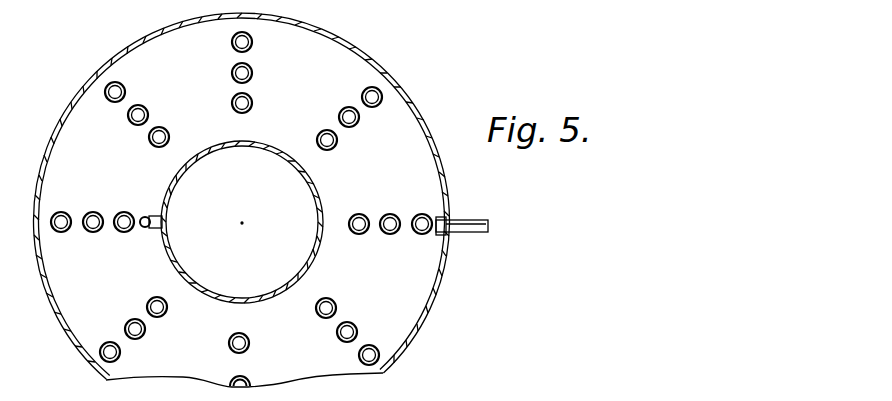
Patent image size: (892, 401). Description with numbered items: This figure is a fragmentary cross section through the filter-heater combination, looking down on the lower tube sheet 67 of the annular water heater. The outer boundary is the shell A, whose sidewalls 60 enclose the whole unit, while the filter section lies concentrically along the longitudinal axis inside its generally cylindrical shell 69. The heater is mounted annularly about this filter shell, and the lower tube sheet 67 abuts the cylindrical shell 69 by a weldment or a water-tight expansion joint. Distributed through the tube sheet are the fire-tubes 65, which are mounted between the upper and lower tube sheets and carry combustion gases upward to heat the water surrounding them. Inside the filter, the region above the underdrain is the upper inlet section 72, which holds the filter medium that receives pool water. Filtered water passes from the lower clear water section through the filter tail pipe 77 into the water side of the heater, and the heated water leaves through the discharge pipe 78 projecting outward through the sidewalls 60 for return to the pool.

The shell A is at (358, 43).
The sidewalls 60 is at (419, 322).
The fire-tubes 65 is at (162, 127).
The lower tube sheet 67 is at (412, 136).
The cylindrical shell 69 is at (318, 213).
The upper inlet section 72 is at (275, 269).
The filter tail pipe 77 is at (147, 228).
The discharge pipe 78 is at (470, 219).